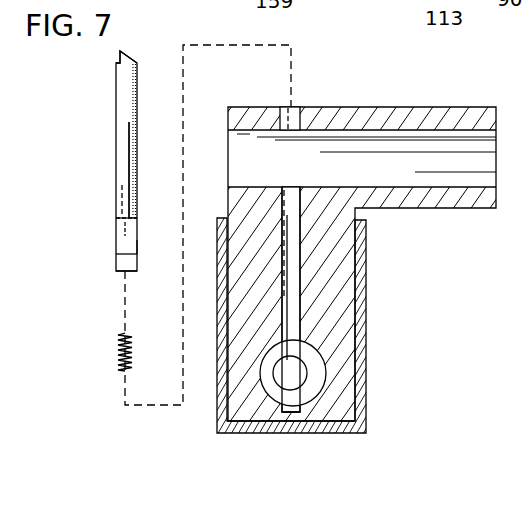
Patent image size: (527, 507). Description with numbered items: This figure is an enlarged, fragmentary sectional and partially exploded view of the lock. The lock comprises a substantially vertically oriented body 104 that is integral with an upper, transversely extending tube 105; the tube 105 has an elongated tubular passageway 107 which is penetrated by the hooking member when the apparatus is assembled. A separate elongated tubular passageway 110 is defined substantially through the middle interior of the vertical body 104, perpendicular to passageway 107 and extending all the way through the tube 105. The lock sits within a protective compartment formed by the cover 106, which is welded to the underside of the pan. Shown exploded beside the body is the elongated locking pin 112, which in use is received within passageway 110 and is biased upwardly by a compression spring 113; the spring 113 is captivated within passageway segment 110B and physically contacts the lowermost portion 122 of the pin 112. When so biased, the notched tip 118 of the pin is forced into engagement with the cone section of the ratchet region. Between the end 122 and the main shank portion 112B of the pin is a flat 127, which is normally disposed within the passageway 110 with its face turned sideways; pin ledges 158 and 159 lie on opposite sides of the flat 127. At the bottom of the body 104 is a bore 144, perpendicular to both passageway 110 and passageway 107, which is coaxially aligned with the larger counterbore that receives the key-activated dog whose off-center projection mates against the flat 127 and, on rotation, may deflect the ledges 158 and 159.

The body 104 is at (357, 252).
The tube 105 is at (466, 122).
The cover 106 is at (217, 355).
The tubular passageway 107 is at (392, 166).
The tubular passageway 110 is at (344, 302).
The passageway segment 110B is at (292, 413).
The locking pin 112 is at (96, 165).
The main shank portion 112B is at (117, 130).
The compression spring 113 is at (116, 345).
The notched tip 118 is at (118, 56).
The lowermost portion 122 is at (120, 268).
The flat 127 is at (125, 232).
The bore 144 is at (298, 373).
The pin ledge 158 is at (125, 222).
The pin ledge 159 is at (137, 247).